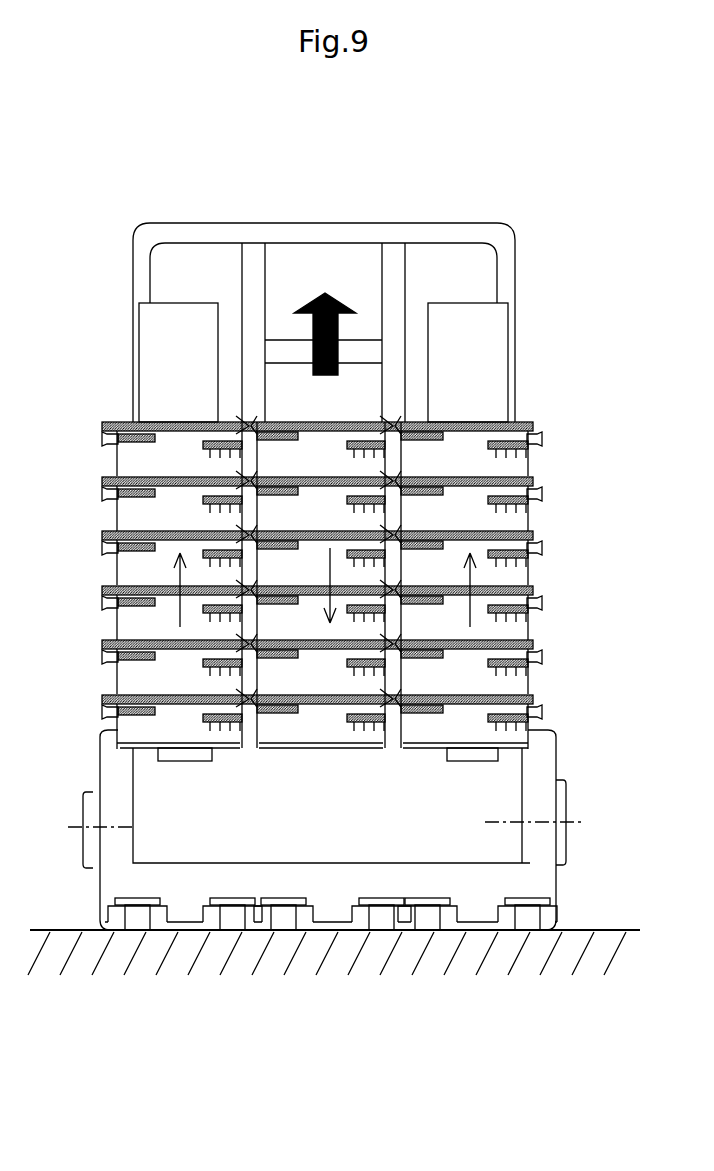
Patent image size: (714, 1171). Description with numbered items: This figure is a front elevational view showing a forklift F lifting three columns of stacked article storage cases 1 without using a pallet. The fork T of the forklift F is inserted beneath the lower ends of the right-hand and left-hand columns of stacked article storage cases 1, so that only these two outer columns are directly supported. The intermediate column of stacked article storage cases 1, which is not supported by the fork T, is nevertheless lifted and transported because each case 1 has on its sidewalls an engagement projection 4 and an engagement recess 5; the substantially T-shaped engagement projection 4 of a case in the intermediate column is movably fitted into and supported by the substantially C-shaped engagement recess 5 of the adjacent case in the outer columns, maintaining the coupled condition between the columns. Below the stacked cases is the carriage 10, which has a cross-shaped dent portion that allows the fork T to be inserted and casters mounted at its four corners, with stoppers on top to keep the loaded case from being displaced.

The forklift F is at (238, 222).
The article storage case 1 is at (316, 740).
The engagement projection 4 is at (295, 562).
The engagement recess 5 is at (350, 553).
The fork T is at (193, 759).
The carriage 10 is at (331, 875).